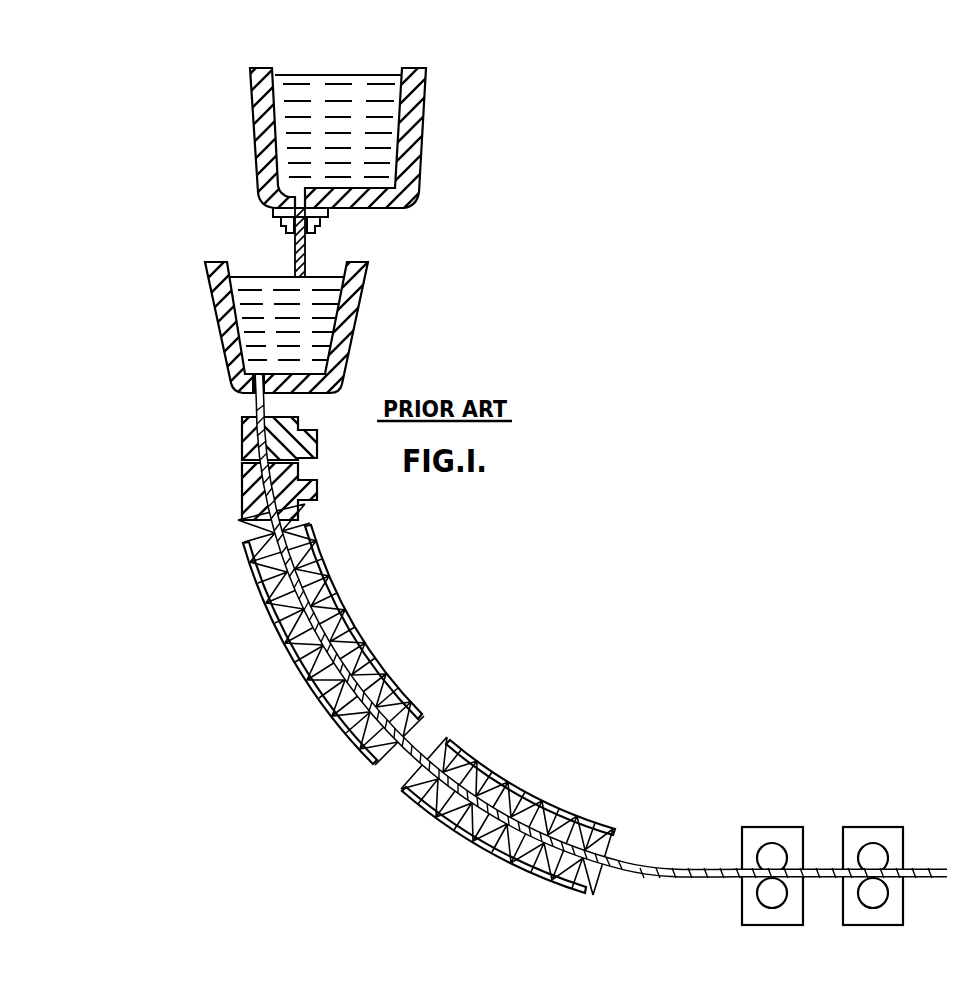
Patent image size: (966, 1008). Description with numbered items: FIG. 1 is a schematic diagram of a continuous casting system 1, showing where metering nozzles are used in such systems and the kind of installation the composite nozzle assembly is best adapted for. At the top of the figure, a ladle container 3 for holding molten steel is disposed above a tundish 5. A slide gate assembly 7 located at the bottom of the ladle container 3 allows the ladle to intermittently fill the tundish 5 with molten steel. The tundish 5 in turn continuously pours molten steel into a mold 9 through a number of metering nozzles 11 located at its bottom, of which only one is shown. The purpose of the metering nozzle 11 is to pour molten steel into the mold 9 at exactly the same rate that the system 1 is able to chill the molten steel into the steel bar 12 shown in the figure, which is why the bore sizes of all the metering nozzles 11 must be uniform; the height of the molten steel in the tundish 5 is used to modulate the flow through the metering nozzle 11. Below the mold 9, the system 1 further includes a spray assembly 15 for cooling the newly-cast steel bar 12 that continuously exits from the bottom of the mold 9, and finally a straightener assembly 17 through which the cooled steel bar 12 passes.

The continuous casting system 1 is at (286, 132).
The ladle container 3 is at (246, 92).
The tundish 5 is at (216, 346).
The slide gate assembly 7 is at (312, 224).
The mold 9 is at (242, 452).
The metering nozzle 11 is at (251, 389).
The steel bar 12 is at (416, 744).
The spray assembly 15 is at (323, 709).
The straightener assembly 17 is at (743, 849).